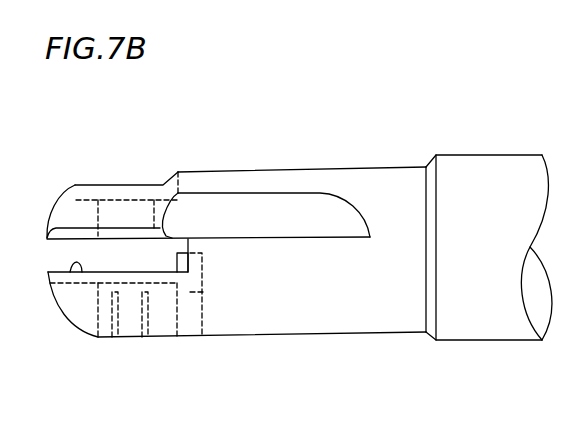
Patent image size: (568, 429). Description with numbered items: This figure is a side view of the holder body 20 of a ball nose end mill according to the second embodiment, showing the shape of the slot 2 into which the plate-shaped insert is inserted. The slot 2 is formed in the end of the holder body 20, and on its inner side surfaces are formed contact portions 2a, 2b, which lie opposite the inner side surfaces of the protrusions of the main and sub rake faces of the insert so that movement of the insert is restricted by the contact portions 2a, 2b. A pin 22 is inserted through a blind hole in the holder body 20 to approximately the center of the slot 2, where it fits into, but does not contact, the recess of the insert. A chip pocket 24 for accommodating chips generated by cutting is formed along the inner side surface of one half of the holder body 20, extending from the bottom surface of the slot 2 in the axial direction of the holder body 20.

The slot 2 is at (82, 272).
The contact portion 2a is at (72, 235).
The contact portion 2b is at (98, 337).
The holder body 20 is at (385, 295).
The pin 22 is at (184, 262).
The chip pocket 24 is at (287, 213).